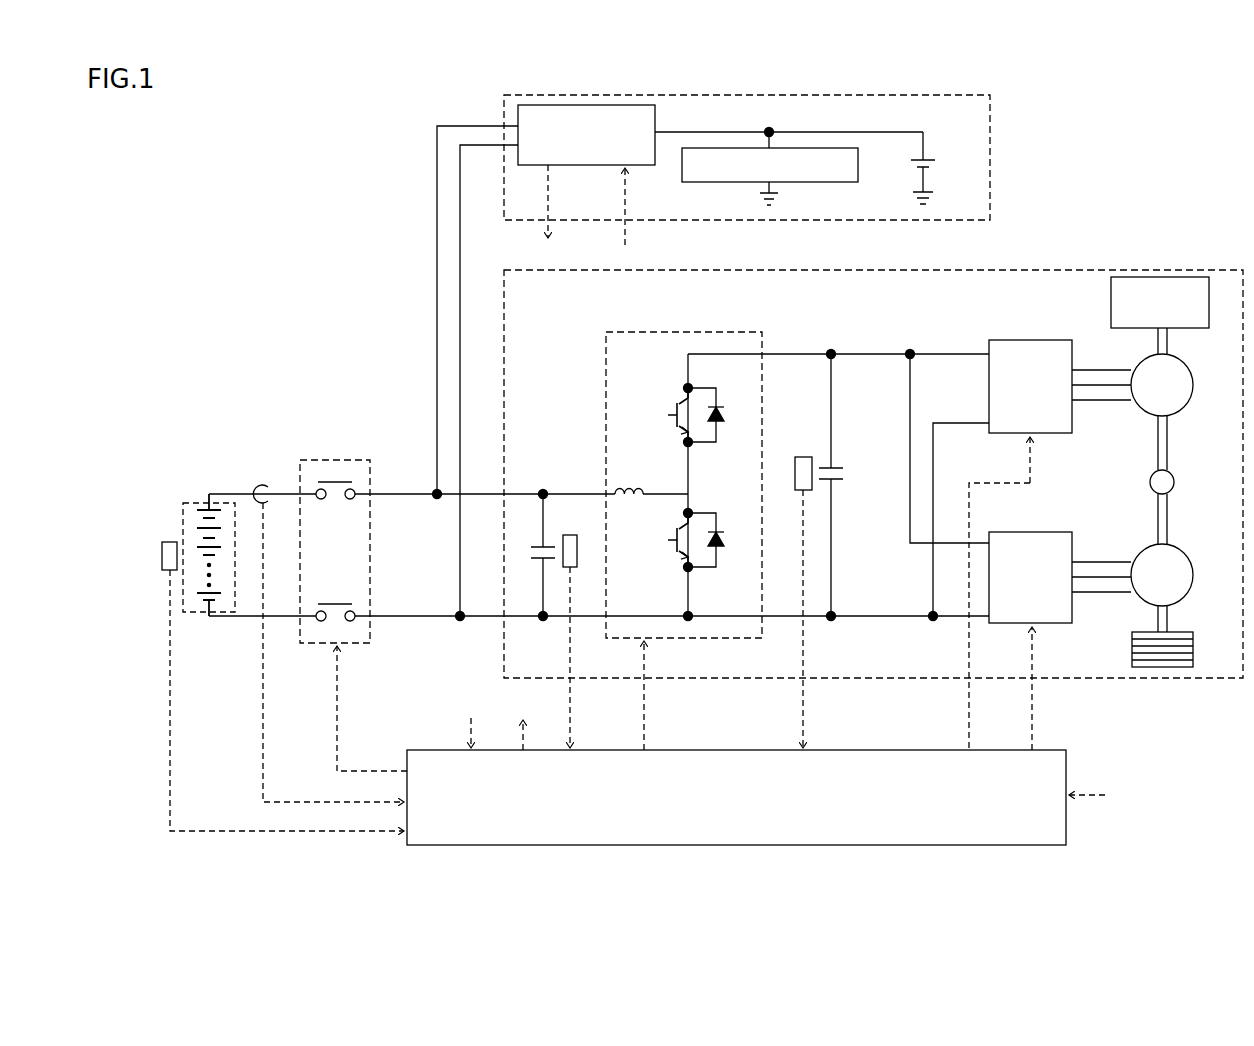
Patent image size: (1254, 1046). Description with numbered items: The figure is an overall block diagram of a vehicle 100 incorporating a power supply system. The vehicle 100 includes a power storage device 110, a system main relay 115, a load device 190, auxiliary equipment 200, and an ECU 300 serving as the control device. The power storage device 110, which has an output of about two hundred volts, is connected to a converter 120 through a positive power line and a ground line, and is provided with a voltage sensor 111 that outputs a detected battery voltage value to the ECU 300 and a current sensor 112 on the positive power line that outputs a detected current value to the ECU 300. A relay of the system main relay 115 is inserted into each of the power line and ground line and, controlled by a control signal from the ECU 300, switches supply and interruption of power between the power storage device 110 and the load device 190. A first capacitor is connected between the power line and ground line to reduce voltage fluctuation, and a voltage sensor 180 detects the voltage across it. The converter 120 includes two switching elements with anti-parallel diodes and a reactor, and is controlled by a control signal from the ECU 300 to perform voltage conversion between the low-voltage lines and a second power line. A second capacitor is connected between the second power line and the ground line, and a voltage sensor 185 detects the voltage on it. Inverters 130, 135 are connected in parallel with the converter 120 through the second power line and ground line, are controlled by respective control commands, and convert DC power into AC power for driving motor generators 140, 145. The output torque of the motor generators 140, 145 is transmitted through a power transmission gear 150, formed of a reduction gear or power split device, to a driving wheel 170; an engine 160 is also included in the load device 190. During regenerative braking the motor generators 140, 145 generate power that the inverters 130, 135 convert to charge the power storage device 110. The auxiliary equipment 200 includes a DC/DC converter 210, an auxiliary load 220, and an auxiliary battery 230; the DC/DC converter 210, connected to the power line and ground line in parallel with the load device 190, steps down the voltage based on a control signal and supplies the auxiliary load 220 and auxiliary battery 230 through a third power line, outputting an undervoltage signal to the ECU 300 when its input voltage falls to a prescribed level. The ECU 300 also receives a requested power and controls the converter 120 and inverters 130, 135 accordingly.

The vehicle 100 is at (1156, 162).
The power storage device 110 is at (195, 502).
The voltage sensor 111 is at (161, 540).
The current sensor 112 is at (263, 485).
The system main relay 115 is at (372, 458).
The converter 120 is at (683, 331).
The inverter 130 is at (1030, 340).
The inverter 135 is at (1030, 532).
The motor generator 140 is at (1190, 362).
The motor generator 145 is at (1190, 552).
The power transmission gear 150 is at (1176, 482).
The engine 160 is at (1110, 297).
The driving wheel 170 is at (1131, 650).
The voltage sensor 180 is at (570, 534).
The voltage sensor 185 is at (803, 456).
The load device 190 is at (1158, 268).
The auxiliary equipment 200 is at (905, 92).
The DC/DC converter 210 is at (655, 122).
The auxiliary load 220 is at (835, 182).
The auxiliary battery 230 is at (928, 157).
The ECU 300 is at (1050, 748).